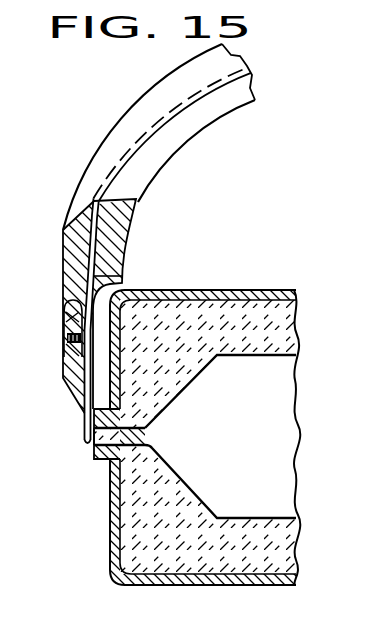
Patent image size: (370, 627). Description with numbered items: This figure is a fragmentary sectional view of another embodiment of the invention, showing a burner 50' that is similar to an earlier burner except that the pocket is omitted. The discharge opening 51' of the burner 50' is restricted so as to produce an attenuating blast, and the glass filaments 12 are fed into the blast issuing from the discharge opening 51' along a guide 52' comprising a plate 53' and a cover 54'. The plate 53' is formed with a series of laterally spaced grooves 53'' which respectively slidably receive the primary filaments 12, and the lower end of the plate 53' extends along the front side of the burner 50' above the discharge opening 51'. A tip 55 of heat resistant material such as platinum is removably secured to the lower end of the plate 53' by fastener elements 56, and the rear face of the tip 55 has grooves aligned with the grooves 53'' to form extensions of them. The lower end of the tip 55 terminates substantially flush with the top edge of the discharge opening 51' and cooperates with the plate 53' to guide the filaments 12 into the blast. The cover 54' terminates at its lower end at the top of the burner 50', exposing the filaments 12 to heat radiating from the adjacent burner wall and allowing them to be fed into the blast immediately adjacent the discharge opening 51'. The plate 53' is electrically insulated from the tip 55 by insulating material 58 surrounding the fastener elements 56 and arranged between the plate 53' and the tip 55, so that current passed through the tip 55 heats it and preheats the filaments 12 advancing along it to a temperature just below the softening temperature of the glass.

The glass filaments 12 is at (122, 276).
The burner 50' is at (200, 426).
The discharge opening 51' is at (101, 447).
The guide 52' is at (160, 137).
The plate 53' is at (65, 176).
The grooves 53'' is at (168, 255).
The cover 54' is at (117, 307).
The tip 55 is at (80, 414).
The fastener elements 56 is at (67, 338).
The insulating material 58 is at (65, 303).